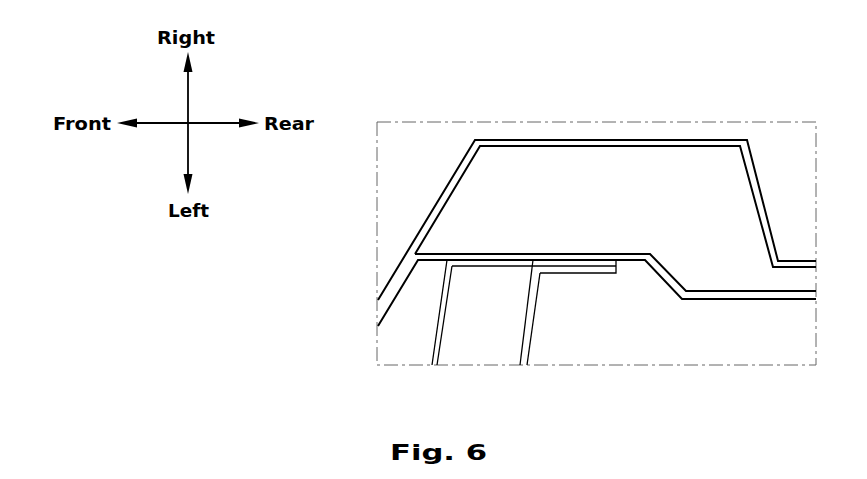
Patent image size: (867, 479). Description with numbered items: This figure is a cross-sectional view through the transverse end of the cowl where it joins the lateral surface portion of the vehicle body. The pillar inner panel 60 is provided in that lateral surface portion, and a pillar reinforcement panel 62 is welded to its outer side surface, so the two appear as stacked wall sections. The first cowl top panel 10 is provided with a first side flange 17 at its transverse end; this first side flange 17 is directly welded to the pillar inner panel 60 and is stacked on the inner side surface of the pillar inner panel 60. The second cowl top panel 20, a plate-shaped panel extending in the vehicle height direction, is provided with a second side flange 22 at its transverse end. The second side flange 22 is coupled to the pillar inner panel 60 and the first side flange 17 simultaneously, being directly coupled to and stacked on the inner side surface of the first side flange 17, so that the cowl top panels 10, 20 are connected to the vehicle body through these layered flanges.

The first cowl top panel 10 is at (556, 234).
The first side flange 17 is at (487, 266).
The second cowl top panel 20 is at (544, 331).
The second side flange 22 is at (583, 273).
The pillar inner panel 60 is at (627, 253).
The pillar reinforcement panel 62 is at (698, 140).